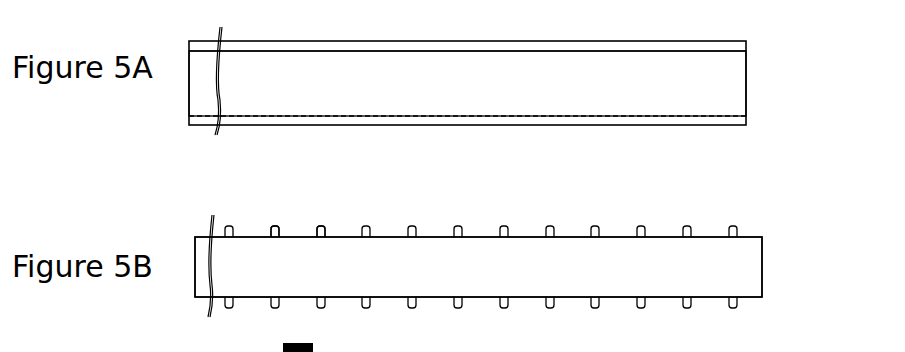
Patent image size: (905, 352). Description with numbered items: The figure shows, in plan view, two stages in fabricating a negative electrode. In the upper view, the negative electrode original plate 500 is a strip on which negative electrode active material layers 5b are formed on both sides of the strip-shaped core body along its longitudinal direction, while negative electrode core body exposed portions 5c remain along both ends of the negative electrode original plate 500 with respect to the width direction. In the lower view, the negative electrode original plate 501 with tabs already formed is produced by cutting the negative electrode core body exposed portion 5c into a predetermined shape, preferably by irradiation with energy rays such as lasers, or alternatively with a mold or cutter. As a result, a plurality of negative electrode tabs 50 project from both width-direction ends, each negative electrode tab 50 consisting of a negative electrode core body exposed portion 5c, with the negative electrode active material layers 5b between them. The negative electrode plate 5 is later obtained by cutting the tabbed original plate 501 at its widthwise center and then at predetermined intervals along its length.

In FIG. 5A, the negative electrode original plate 500 is at (431, 128).
In FIG. 5A, the negative electrode active material layer 5b is at (733, 82).
In FIG. 5B, the negative electrode active material layer 5b is at (737, 272).
In FIG. 5A, the negative electrode core body exposed portion 5c is at (740, 44).
In FIG. 5B, the negative electrode plate 5 is at (478, 283).
In FIG. 5B, the negative electrode tab 50 is at (737, 226).
In FIG. 5B, the negative electrode original plate with tabs already formed 501 is at (299, 233).